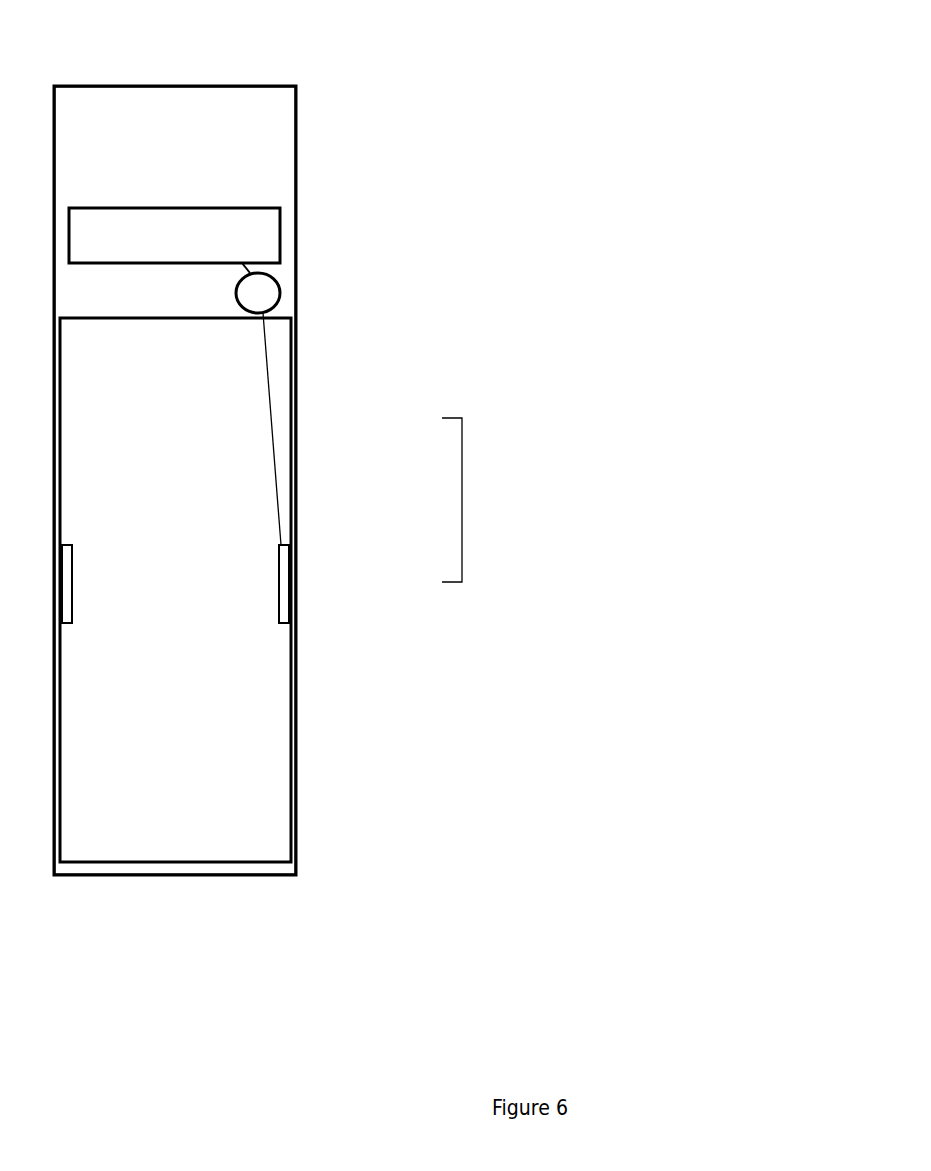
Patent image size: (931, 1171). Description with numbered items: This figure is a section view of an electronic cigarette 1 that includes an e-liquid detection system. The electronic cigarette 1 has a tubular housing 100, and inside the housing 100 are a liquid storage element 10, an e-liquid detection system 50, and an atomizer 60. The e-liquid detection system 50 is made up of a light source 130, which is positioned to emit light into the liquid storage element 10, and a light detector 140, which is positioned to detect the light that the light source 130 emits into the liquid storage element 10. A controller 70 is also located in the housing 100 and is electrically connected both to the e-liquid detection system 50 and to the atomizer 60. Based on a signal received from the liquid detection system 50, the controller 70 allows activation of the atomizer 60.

The electronic cigarette 1 is at (320, 138).
The tubular housing 100 is at (297, 193).
The atomizer 60 is at (280, 223).
The controller 70 is at (280, 285).
The liquid storage element 10 is at (297, 735).
The light source 130 is at (237, 518).
The light detector 140 is at (297, 607).
The e-liquid detection system 50 is at (476, 500).